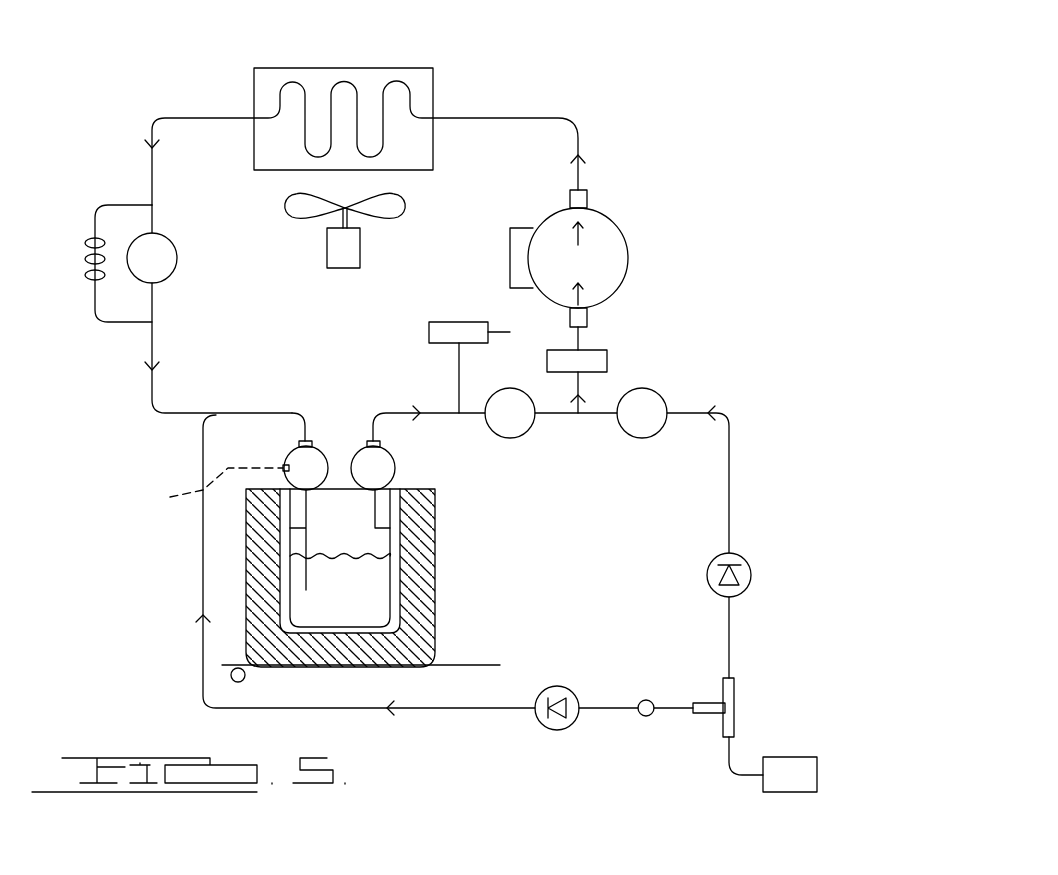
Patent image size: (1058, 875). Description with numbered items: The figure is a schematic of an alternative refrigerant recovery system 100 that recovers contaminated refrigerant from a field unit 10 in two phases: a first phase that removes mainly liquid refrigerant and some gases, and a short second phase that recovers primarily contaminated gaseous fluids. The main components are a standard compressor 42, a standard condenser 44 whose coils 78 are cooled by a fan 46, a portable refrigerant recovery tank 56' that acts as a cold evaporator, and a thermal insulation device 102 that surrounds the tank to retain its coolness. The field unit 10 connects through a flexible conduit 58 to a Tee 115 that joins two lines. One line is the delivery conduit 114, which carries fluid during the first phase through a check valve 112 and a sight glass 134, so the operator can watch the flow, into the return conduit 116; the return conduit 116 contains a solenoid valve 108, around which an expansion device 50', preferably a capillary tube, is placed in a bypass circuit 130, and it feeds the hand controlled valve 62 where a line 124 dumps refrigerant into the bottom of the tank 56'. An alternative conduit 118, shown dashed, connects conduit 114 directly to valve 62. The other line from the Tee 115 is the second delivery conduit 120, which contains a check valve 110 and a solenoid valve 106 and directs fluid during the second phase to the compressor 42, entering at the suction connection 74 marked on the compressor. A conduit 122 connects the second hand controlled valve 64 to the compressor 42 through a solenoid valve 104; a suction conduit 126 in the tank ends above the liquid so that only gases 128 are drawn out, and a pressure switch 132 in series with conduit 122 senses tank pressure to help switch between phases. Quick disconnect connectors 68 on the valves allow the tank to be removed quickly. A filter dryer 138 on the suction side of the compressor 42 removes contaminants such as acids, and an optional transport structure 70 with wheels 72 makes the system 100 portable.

The field unit 10 is at (825, 770).
The compressor 42 is at (622, 232).
The condenser 44 is at (258, 80).
The fan 46 is at (330, 256).
The expansion device 50' is at (66, 247).
The portable refrigerant recovery tank 56' is at (383, 578).
The conduit 58 is at (735, 777).
The hand controlled fluid flow valve 62 is at (318, 440).
The hand controlled fluid flow valve 64 is at (358, 440).
The quick disconnect connectors 68 is at (298, 443).
The transport structure 70 is at (492, 662).
The wheels 72 is at (231, 676).
The suction port 74 is at (588, 322).
The coils 78 is at (415, 92).
The refrigerant recovery system 100 is at (600, 100).
The thermal insulation device 102 is at (268, 623).
The solenoid valve 104 is at (528, 432).
The solenoid valve 106 is at (645, 440).
The solenoid valve 108 is at (178, 255).
The check valve 110 is at (750, 572).
The check valve 112 is at (546, 716).
The conduit 114 is at (203, 580).
The Tee 115 is at (742, 705).
The return conduit 116 is at (240, 412).
The alternative conduit 118 is at (208, 488).
The fluid conduit 120 is at (732, 628).
The fluid conduit 122 is at (396, 411).
The line 124 is at (290, 528).
The suction conduit 126 is at (390, 522).
The gases 128 is at (367, 545).
The circuit 130 is at (116, 205).
The pressure switch 132 is at (453, 322).
The sight glass 134 is at (650, 698).
The filter dryer 138 is at (608, 363).